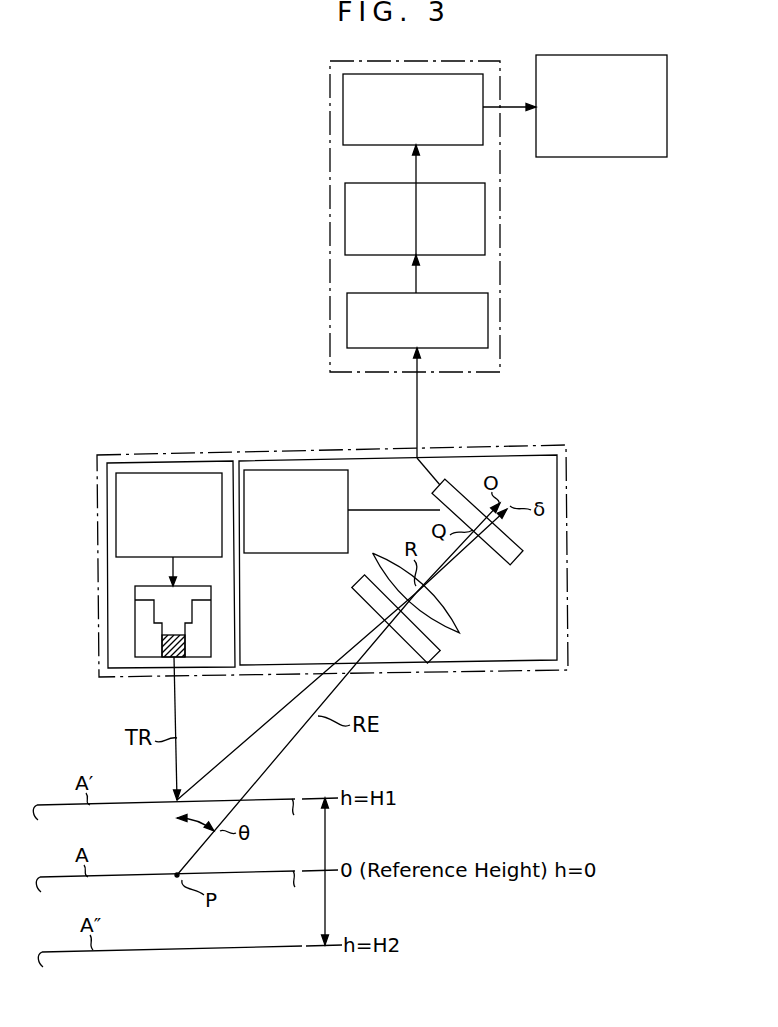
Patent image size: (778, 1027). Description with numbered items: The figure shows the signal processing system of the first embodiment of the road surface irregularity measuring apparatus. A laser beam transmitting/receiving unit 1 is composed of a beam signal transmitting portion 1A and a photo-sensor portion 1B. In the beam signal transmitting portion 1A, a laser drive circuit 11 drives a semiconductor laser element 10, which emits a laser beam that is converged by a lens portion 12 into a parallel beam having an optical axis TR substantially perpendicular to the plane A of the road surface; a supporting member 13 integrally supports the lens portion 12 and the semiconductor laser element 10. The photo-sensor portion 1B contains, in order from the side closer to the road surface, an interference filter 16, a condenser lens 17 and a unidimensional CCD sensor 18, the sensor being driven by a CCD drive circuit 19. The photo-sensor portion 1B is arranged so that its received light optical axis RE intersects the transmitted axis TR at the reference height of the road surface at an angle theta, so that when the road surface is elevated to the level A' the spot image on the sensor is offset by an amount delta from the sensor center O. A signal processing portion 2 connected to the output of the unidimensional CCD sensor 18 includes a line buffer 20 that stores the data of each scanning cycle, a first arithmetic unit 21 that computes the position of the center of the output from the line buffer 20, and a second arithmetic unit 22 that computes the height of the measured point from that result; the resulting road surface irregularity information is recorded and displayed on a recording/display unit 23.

The laser beam transmitting/receiving unit 1 is at (487, 447).
The beam signal transmitting portion 1A is at (162, 457).
The photo-sensor portion 1B is at (562, 504).
The signal processing portion 2 is at (501, 207).
The semiconductor laser element 10 is at (163, 611).
The laser drive circuit 11 is at (116, 504).
The lens portion 12 is at (168, 657).
The laser housing 13 is at (135, 633).
The interference filter 16 is at (436, 648).
The condenser lens 17 is at (460, 620).
The unidimensional CCD sensor 18 is at (515, 558).
The CCD drive circuit 19 is at (288, 470).
The line buffer 20 is at (347, 316).
The first arithmetic unit 21 is at (345, 207).
The second arithmetic unit 22 is at (343, 110).
The recording/display unit 23 is at (667, 100).